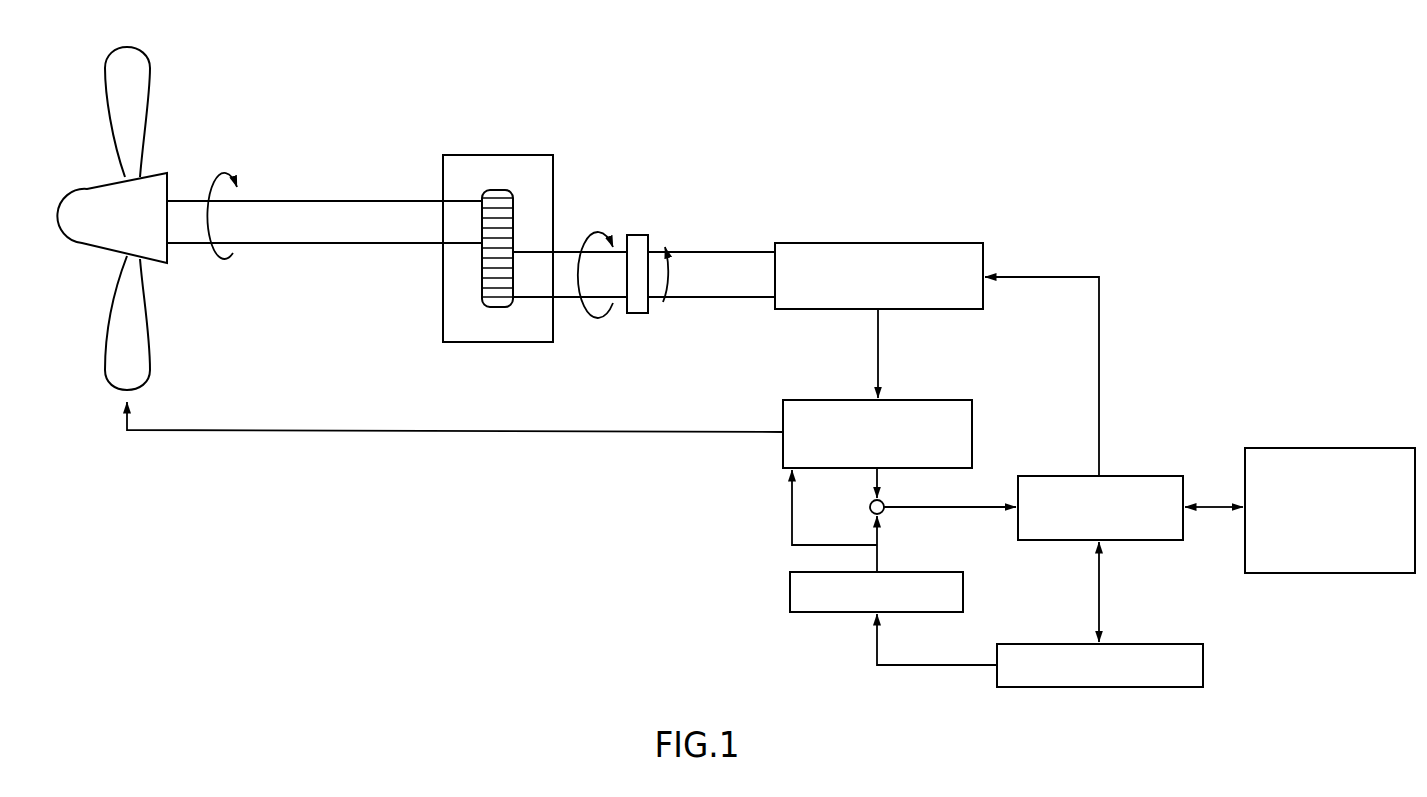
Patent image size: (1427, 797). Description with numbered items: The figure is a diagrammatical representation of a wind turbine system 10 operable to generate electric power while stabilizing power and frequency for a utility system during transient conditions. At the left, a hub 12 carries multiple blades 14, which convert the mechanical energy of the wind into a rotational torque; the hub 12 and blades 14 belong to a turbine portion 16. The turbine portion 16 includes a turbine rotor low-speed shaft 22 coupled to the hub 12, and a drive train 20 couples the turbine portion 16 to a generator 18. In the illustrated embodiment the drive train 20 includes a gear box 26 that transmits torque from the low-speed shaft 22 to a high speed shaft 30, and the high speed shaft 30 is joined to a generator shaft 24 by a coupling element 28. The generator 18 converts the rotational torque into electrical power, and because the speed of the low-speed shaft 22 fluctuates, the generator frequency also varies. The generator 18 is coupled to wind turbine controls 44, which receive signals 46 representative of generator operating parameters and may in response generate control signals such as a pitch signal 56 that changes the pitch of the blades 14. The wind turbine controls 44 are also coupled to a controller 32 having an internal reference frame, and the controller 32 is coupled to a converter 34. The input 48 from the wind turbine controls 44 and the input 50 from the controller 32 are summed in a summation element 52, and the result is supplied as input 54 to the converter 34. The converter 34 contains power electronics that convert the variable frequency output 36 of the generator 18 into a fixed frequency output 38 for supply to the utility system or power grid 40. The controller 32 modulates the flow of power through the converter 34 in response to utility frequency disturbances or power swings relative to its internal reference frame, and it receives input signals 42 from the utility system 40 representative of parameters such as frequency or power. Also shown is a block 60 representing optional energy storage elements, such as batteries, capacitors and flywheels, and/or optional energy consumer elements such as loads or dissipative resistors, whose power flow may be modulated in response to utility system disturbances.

The wind turbine system 10 is at (1226, 50).
The hub 12 is at (83, 200).
The blades 14 is at (144, 100).
The turbine portion 16 is at (296, 131).
The generator 18 is at (878, 242).
The drive train 20 is at (514, 110).
The turbine rotor low-speed shaft 22 is at (325, 237).
The generator shaft 24 is at (738, 255).
The gear box 26 is at (555, 188).
The coupling element 28 is at (637, 236).
The high speed shaft 30 is at (567, 300).
The controller 32 is at (790, 590).
The converter 34 is at (1155, 476).
The variable frequency output 36 is at (1065, 277).
The fixed frequency output 38 is at (1100, 580).
The utility system 40 is at (1203, 665).
The input signals 42 is at (938, 666).
The wind turbine controls 44 is at (808, 400).
The signals 46 is at (878, 348).
The input from wind turbine controls 48 is at (867, 477).
The input from controller 50 is at (880, 548).
The summation element 52 is at (872, 513).
The input to converter 54 is at (927, 507).
The pitch signal 56 is at (495, 433).
The block of optional energy storage elements and/or energy consumer elements 60 is at (1277, 448).